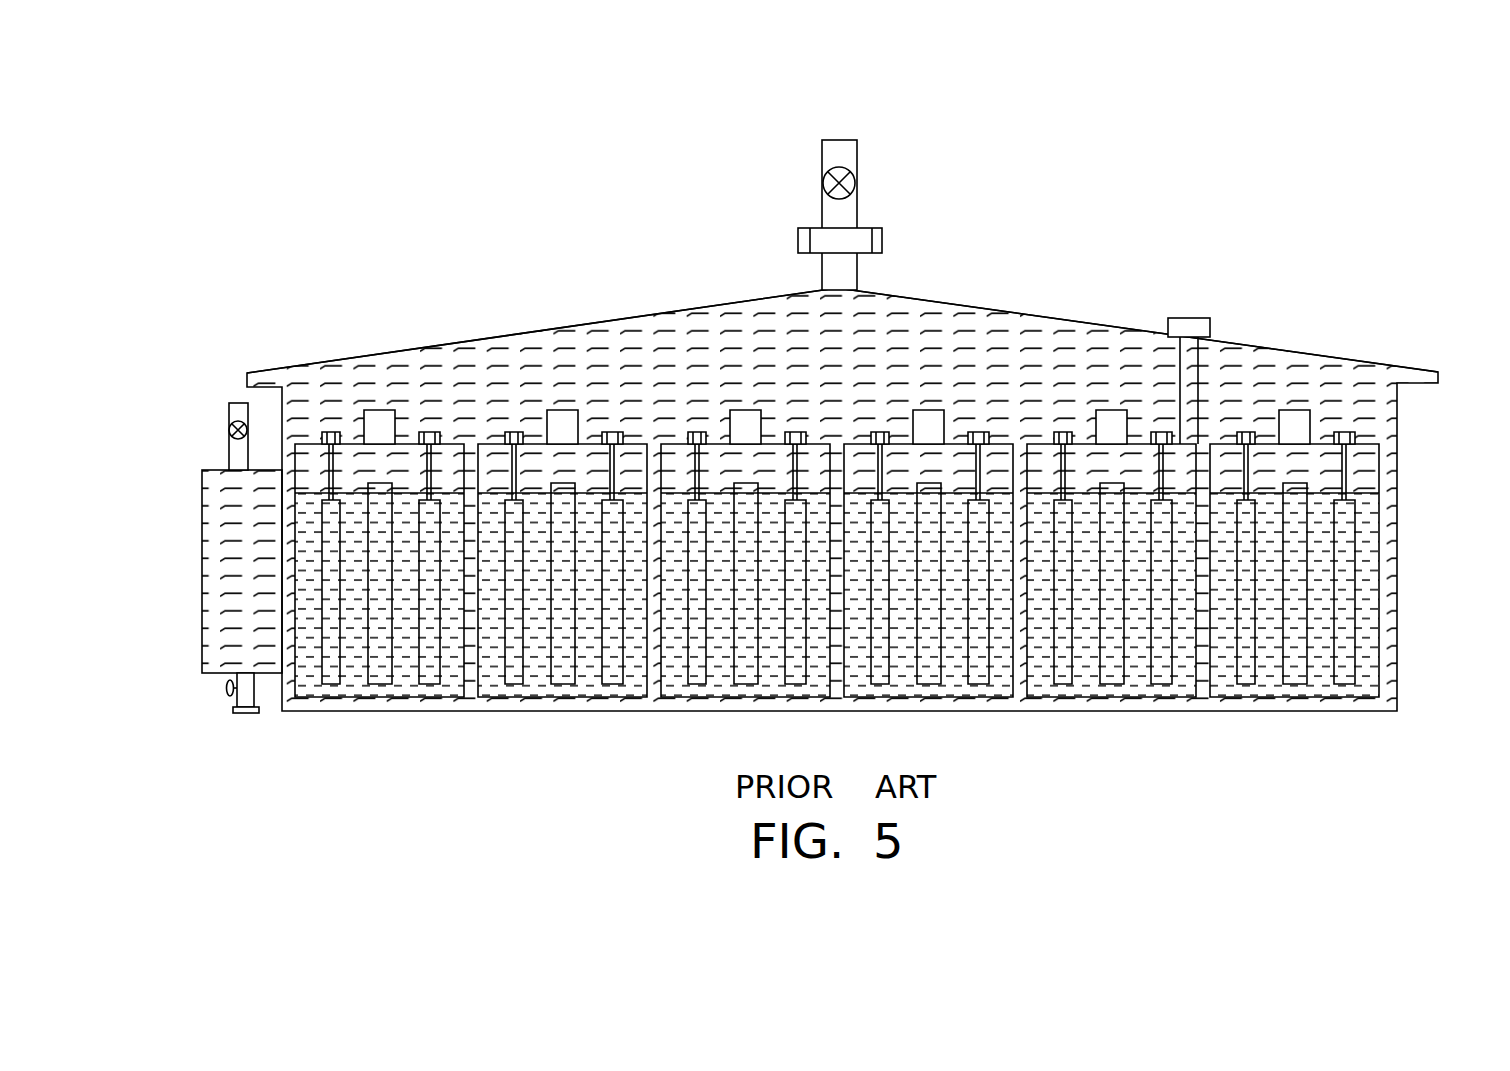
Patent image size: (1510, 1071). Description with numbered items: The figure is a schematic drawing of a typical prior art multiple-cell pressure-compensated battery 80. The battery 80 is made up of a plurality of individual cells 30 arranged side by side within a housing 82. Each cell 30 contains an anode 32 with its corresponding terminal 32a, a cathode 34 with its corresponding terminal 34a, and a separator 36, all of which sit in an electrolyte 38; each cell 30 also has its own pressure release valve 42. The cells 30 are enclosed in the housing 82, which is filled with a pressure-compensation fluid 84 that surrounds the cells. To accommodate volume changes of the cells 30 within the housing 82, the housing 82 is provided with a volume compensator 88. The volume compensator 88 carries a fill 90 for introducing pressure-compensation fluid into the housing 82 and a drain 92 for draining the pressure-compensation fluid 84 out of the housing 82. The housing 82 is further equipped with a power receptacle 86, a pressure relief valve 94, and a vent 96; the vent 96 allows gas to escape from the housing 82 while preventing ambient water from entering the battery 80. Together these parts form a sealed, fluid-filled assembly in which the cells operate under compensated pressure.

The individual cell 30 is at (1397, 544).
The anode 32 is at (1172, 670).
The terminal 32a is at (428, 432).
The cathode 34 is at (1073, 670).
The terminal 34a is at (331, 432).
The separator 36 is at (747, 672).
The electrolyte 38 is at (542, 685).
The pressure release valve 42 is at (380, 412).
The multiple-cell pressure-compensated battery 80 is at (844, 427).
The housing 82 is at (612, 320).
The pressure-compensation fluid 84 is at (1008, 340).
The power receptacle 86 is at (1188, 320).
The volume compensator 88 is at (203, 653).
The fill 90 is at (228, 432).
The drain 92 is at (238, 710).
The pressure relief valve 94 is at (798, 236).
The vent 96 is at (830, 168).